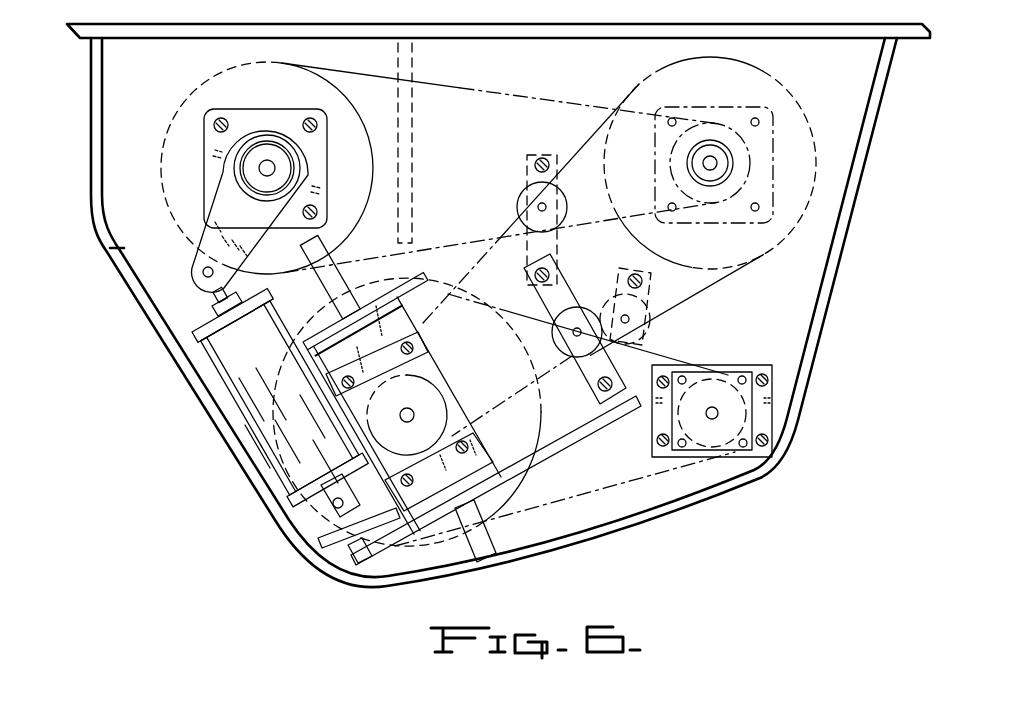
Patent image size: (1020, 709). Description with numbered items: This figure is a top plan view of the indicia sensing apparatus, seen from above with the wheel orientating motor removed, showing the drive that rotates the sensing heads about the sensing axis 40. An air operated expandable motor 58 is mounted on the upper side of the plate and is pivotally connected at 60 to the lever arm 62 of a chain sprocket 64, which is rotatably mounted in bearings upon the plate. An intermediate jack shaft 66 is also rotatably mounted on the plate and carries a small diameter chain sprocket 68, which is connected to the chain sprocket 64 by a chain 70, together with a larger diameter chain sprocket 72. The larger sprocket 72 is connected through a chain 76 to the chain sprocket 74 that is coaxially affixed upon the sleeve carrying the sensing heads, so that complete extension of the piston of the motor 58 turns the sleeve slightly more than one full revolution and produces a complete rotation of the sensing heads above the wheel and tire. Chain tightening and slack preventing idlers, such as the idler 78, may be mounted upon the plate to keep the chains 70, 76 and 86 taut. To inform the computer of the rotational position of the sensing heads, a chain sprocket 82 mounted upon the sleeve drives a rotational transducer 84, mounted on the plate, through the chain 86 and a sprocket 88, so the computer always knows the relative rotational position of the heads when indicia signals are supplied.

The sensing axis 40 is at (413, 412).
The air operated expandable motor 58 is at (261, 356).
The pivotal connection 60 is at (202, 267).
The lever arm 62 is at (256, 219).
The chain sprocket 64 is at (204, 88).
The intermediate jack shaft 66 is at (719, 165).
The small diameter chain sprocket 68 is at (730, 128).
The chain 70 is at (532, 94).
The larger diameter chain sprocket 72 is at (778, 242).
The chain sprocket 74 is at (478, 395).
The chain 76 is at (478, 271).
The idlers 78 is at (590, 296).
The chain sprocket 82 is at (497, 310).
The rotational transducer 84 is at (717, 437).
The chain 86 is at (588, 493).
The sprocket 88 is at (724, 386).